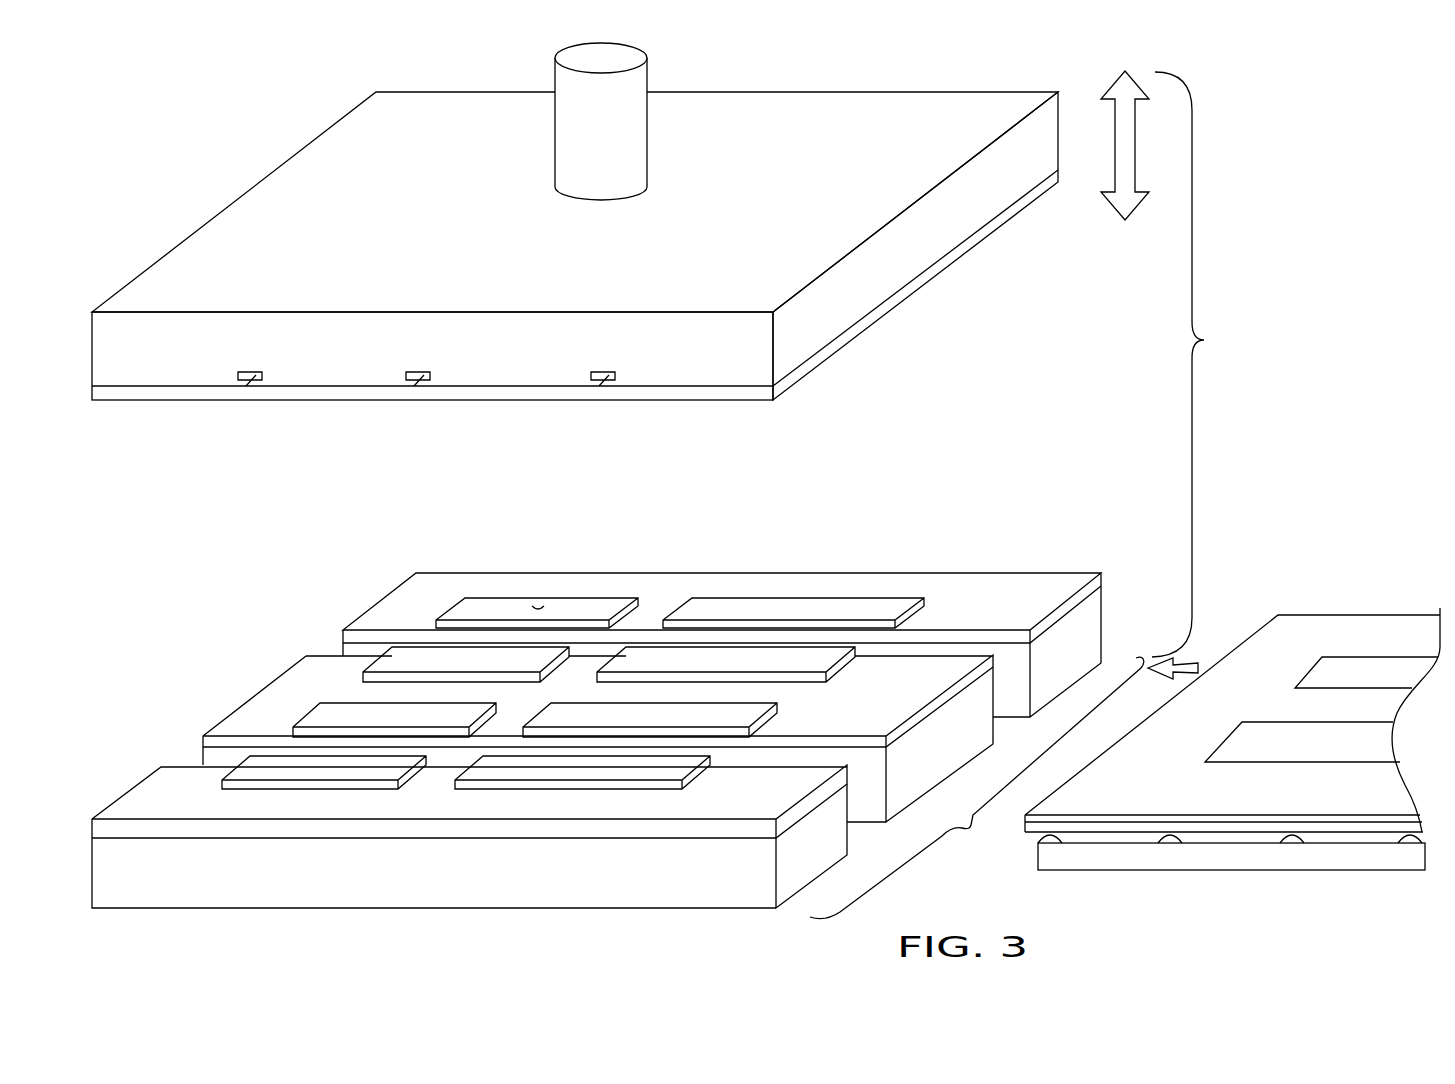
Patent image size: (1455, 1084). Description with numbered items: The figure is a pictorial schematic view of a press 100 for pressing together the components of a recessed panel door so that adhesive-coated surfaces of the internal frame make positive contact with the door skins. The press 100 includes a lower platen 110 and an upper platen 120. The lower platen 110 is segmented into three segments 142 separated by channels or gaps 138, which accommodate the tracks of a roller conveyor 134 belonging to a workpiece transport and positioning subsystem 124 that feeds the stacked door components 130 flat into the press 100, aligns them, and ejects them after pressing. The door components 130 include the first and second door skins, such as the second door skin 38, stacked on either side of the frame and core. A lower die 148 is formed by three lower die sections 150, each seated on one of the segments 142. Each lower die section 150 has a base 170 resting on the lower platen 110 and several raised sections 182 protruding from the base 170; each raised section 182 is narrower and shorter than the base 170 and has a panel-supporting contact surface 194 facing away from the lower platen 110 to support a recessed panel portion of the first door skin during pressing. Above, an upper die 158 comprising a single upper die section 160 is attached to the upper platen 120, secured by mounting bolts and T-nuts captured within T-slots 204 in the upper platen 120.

The second door skin 38 is at (1298, 632).
The press 100 is at (1211, 364).
The lower platen 110 is at (977, 787).
The upper platen 120 is at (575, 222).
The workpiece transport and positioning subsystem 124 is at (1231, 891).
The door components 130 is at (1232, 681).
The roller conveyor 134 is at (1182, 862).
The gaps 138 is at (628, 729).
The segments 142 is at (628, 733).
The lower die 148 is at (628, 729).
The lower die sections 150 is at (1093, 582).
The upper die 158 is at (575, 286).
The upper die section 160 is at (831, 347).
The base 170 is at (746, 584).
The raised section 182 is at (611, 600).
The panel-supporting contact surface 194 is at (538, 605).
The T-slots 204 is at (610, 372).